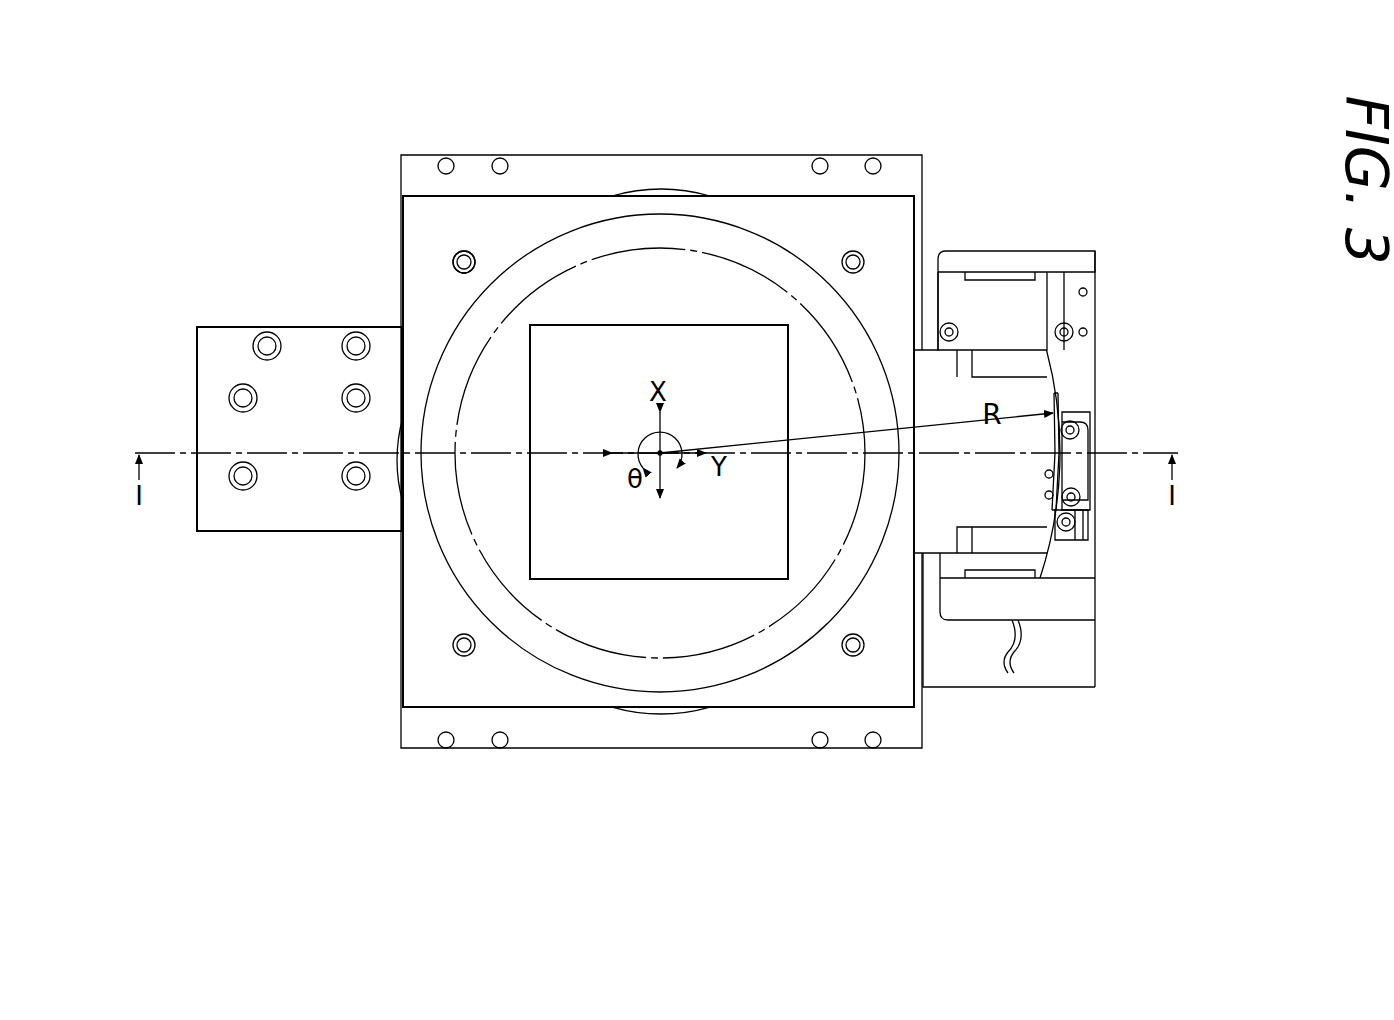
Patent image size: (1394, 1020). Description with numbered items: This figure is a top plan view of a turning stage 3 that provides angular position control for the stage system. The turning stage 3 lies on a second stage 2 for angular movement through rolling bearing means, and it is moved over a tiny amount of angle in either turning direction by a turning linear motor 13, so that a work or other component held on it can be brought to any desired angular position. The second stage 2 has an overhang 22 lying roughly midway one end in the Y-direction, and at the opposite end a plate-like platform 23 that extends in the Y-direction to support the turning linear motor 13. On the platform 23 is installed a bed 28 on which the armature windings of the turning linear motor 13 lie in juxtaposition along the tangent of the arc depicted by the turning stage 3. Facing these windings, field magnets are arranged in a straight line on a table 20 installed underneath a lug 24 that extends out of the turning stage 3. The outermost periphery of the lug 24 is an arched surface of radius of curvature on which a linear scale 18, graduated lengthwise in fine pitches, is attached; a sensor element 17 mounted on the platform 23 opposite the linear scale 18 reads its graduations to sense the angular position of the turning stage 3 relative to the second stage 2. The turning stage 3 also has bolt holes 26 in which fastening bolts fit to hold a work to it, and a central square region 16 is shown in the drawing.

The second stage 2 is at (742, 168).
The turning stage 3 is at (797, 233).
The turning linear motor 13 is at (1015, 308).
The central square opening 16 is at (606, 578).
The sensor element 17 is at (1080, 441).
The linear scale 18 is at (1062, 411).
The table 20 is at (1030, 540).
The overhang 22 is at (302, 497).
The platform 23 is at (1073, 657).
The lug 24 is at (1003, 493).
The bolt hole 26 is at (453, 258).
The bed 28 is at (1060, 352).